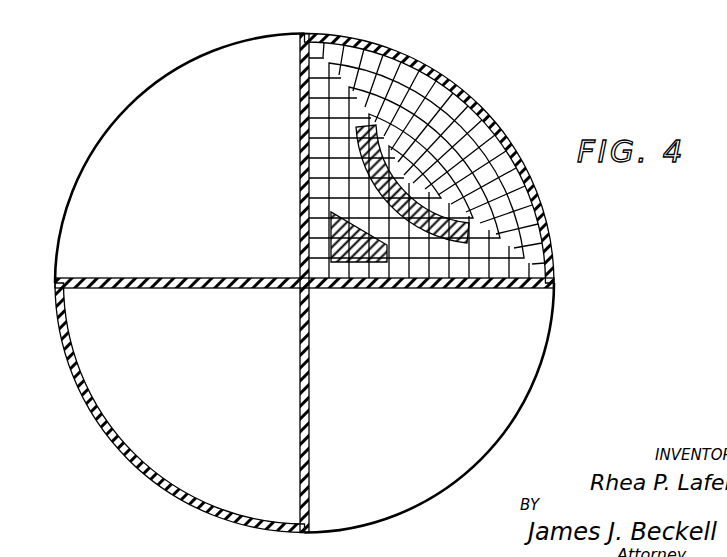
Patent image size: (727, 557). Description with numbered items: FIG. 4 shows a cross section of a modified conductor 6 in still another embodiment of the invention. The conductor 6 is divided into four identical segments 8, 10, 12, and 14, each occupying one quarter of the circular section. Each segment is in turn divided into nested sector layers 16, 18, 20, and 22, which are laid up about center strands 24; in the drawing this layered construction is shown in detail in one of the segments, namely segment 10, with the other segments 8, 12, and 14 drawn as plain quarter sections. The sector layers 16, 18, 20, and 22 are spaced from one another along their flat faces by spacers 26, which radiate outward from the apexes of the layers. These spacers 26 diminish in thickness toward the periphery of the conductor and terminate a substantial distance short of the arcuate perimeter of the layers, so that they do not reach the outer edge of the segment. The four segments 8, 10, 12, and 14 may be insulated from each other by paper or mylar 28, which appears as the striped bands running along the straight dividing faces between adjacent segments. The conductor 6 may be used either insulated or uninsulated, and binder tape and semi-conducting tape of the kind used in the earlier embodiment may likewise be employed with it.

The conductor 6 is at (388, 45).
The segment 8 is at (177, 78).
The segment 10 is at (468, 115).
The segment 12 is at (517, 377).
The segment 14 is at (117, 413).
The sector layer 16 is at (305, 116).
The sector layer 18 is at (303, 216).
The sector layer 20 is at (360, 277).
The sector layer 22 is at (428, 277).
The center strands 24 is at (492, 133).
The spacers 26 is at (303, 173).
The paper or mylar 28 is at (298, 341).